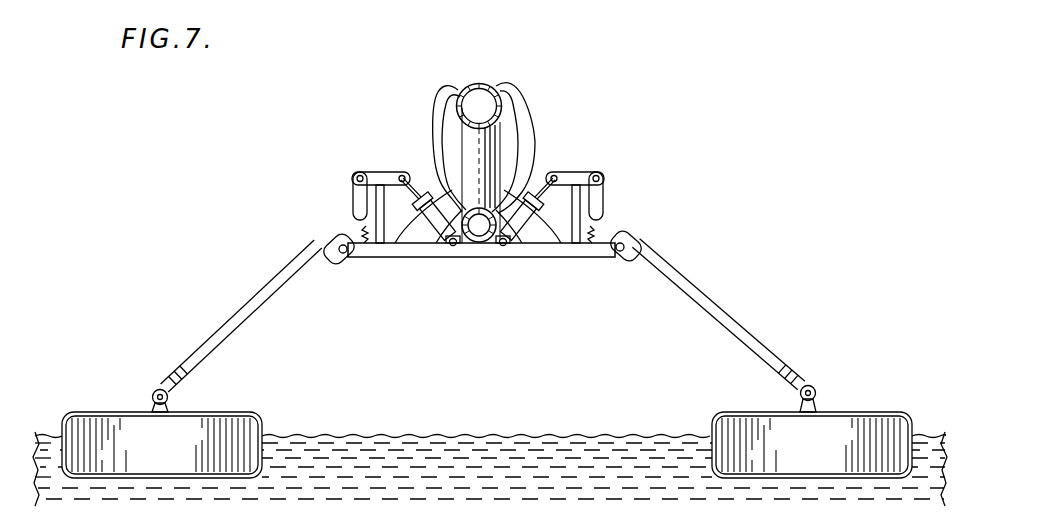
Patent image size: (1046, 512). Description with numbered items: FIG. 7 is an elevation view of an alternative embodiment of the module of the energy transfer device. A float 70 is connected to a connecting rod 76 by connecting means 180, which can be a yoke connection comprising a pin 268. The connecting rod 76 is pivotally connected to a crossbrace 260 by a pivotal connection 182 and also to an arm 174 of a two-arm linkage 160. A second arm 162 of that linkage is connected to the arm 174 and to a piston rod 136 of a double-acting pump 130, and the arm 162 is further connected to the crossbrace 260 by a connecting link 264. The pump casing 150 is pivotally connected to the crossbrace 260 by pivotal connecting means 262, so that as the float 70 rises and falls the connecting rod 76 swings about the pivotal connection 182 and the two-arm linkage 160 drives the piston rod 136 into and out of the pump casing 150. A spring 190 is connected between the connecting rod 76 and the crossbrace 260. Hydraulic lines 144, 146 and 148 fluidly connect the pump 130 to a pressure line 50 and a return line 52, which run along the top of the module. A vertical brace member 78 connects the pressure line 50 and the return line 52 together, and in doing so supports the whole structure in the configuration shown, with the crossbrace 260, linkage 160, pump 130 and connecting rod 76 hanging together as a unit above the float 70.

The return line 52 is at (489, 84).
The pressure line 50 is at (486, 237).
The vertical brace member 78 is at (468, 143).
The hydraulic line 144 is at (440, 116).
The hydraulic line 146 is at (434, 98).
The piston rod 136 is at (530, 180).
The hydraulic line 148 is at (381, 257).
The pump casing 150 is at (431, 230).
The double-acting pump 130 is at (530, 228).
The two-arm linkage 160 is at (592, 188).
The second arm 162 is at (566, 176).
The connecting link 264 is at (578, 193).
The arm 174 is at (596, 198).
The pivotal connection 182 is at (334, 237).
The spring 190 is at (600, 251).
The crossbrace 260 is at (367, 249).
The pivotal connecting means 262 is at (459, 249).
The connecting rod 76 is at (240, 324).
The connecting means 180 is at (147, 390).
The pin 268 is at (173, 400).
The float 70 is at (82, 427).